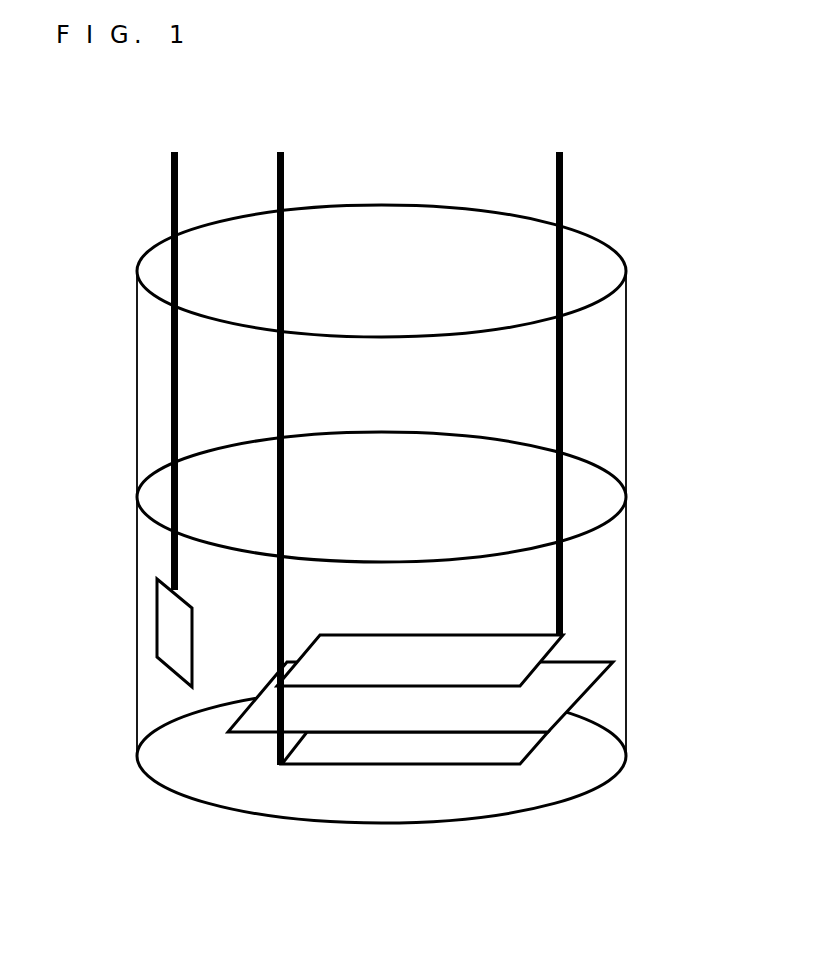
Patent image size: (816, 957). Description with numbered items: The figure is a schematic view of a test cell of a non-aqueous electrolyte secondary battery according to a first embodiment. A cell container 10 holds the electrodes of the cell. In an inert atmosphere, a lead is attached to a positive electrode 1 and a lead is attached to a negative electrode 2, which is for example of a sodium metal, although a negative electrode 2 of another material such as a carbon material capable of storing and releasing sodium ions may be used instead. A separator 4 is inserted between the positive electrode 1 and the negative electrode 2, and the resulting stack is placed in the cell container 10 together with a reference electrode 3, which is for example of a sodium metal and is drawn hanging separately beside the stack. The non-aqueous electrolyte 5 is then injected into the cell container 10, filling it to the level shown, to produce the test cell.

The cell container 10 is at (627, 437).
The non-aqueous electrolyte 5 is at (607, 588).
The positive electrode 1 is at (425, 749).
The separator 4 is at (572, 690).
The negative electrode 2 is at (402, 647).
The reference electrode 3 is at (175, 623).